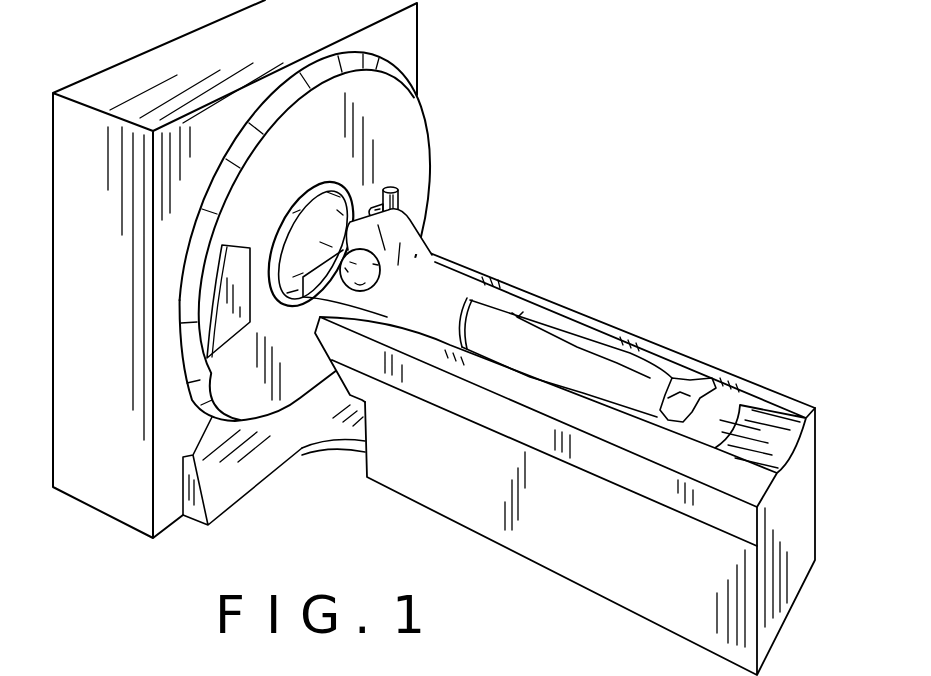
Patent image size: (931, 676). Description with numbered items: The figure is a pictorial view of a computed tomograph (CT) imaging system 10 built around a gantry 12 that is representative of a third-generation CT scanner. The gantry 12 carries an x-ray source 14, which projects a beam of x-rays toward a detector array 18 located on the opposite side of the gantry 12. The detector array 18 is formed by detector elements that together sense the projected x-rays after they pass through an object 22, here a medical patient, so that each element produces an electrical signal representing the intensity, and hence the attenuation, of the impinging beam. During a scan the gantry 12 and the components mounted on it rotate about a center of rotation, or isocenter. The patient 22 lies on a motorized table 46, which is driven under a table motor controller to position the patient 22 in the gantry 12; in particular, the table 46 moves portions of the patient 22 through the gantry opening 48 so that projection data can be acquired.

The computed tomograph (CT) imaging system 10 is at (342, 462).
The gantry 12 is at (83, 141).
The x-ray source 14 is at (399, 208).
The detector array 18 is at (228, 320).
The object (medical patient) 22 is at (440, 287).
The motorized table 46 is at (443, 482).
The gantry opening 48 is at (327, 213).